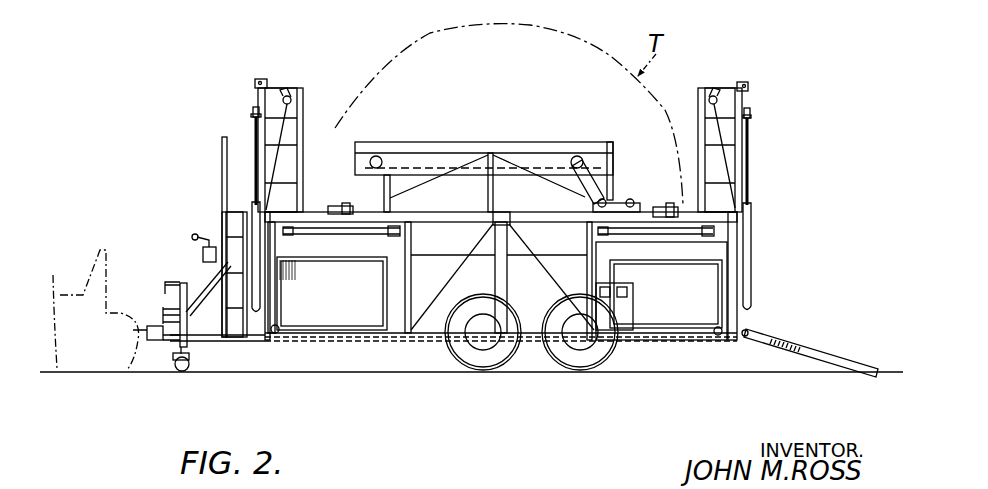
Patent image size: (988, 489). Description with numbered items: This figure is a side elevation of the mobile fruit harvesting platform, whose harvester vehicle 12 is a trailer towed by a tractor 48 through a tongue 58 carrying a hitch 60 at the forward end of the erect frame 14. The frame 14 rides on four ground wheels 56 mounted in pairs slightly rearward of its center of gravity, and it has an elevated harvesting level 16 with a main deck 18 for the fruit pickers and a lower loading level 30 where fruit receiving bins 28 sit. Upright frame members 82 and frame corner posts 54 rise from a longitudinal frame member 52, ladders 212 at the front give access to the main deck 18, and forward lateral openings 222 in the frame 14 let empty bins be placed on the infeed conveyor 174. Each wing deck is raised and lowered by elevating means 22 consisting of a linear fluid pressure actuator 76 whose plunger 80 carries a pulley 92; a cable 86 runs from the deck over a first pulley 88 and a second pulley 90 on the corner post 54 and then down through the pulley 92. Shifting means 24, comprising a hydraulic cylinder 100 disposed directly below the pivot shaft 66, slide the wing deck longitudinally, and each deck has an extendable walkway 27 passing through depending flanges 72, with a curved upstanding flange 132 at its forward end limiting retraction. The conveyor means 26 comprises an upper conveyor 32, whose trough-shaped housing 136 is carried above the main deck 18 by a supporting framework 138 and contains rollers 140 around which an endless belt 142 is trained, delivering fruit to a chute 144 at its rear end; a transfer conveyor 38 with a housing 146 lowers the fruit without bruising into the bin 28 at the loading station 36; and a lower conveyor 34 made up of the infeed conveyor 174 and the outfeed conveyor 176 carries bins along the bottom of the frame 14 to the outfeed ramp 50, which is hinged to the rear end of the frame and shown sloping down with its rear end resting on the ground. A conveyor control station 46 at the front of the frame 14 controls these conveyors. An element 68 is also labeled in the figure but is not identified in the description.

The harvester vehicle 12 is at (389, 352).
The harvester frame 14 is at (305, 347).
The elevated harvesting level 16 is at (695, 209).
The main deck 18 is at (428, 212).
The elevating means 22 is at (254, 135).
The shifting means 24 is at (362, 236).
The conveyor means 26 is at (655, 158).
The extendable walkway 27 is at (343, 203).
The fruit receiving bins 28 is at (507, 288).
The lower loading level 30 is at (765, 294).
The upper conveyor 32 is at (503, 139).
The lower conveyor means 34 is at (332, 321).
The loading station 36 is at (718, 250).
The transfer conveyor 38 is at (652, 256).
The conveyor control station 46 is at (196, 233).
The tractor 48 is at (88, 310).
The outfeed ramp 50 is at (816, 349).
The longitudinal frame member 52 is at (727, 234).
The frame corner post 54 is at (306, 94).
The ground wheels 56 is at (547, 352).
The tongue 58 is at (165, 345).
The hitch 60 is at (143, 327).
The pivot shaft 66 is at (546, 206).
The center post block 68 is at (505, 211).
The depending wing deck flanges 72 is at (411, 220).
The linear fluid pressure actuator 76 is at (254, 200).
The plunger 80 is at (254, 149).
The upright frame member 82 is at (267, 300).
The cable 86 is at (280, 152).
The first cable guide pulley 88 is at (288, 97).
The second cable guide pulley 90 is at (262, 79).
The plunger cable guide pulley 92 is at (253, 109).
The double-acting hydraulic cylinder 100 is at (328, 231).
The curved upstanding flange 132 is at (352, 204).
The conveyor housing 136 is at (412, 156).
The supporting framework 138 is at (483, 182).
The rollers 140 is at (378, 158).
The endless conveyor belt 142 is at (447, 156).
The chute 144 is at (604, 176).
The transfer conveyor housing 146 is at (650, 200).
The infeed conveyor 174 is at (371, 344).
The outfeed conveyor 176 is at (690, 338).
The ladders 212 is at (228, 212).
The forward lateral openings 222 is at (305, 245).